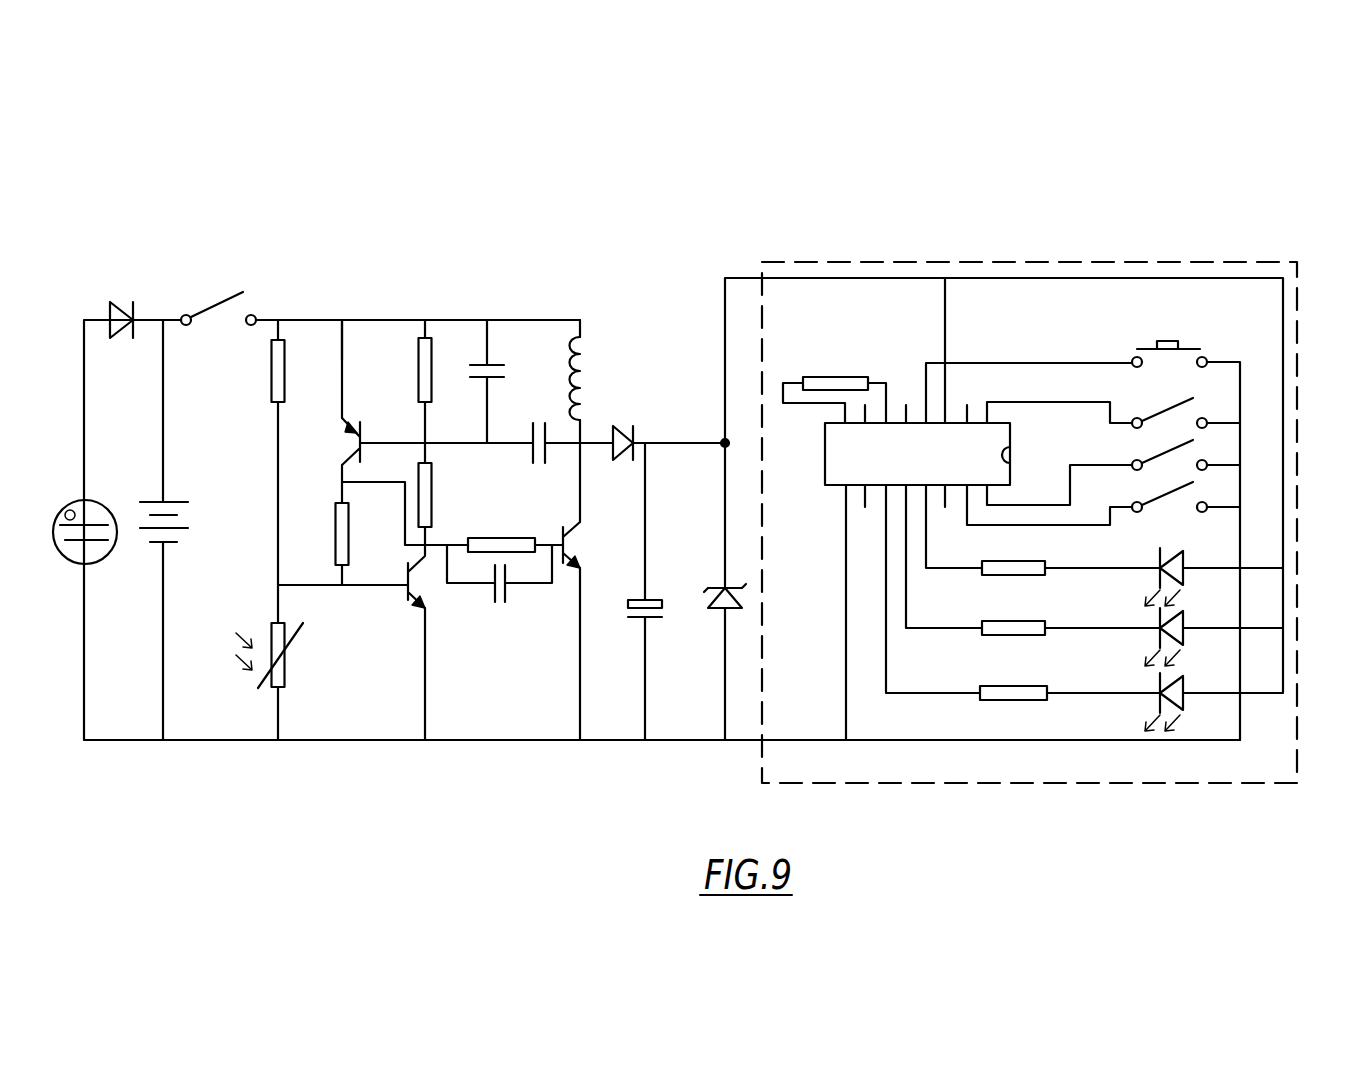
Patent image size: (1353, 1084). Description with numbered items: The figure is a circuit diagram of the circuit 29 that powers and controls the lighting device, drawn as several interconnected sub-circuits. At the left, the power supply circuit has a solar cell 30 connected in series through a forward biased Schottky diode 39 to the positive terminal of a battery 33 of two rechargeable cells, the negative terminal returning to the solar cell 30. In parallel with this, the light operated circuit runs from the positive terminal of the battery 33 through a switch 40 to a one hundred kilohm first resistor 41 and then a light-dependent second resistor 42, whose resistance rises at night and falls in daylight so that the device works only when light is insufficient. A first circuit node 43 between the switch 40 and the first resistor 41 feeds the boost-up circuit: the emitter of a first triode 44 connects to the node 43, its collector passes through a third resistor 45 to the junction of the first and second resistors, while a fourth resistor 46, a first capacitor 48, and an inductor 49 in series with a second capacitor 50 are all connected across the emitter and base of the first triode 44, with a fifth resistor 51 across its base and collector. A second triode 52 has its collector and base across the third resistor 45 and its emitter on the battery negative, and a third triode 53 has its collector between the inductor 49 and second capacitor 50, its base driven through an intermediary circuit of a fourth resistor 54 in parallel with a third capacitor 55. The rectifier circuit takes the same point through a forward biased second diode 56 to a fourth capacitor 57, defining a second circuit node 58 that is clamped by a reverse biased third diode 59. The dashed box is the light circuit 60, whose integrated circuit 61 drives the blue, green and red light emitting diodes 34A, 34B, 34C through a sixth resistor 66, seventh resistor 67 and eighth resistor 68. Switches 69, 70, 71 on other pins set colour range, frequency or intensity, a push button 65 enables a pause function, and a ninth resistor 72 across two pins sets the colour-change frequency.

The circuit 29 is at (1078, 220).
The solar cell 30 is at (100, 505).
The battery 33 is at (178, 493).
The diode 39 is at (135, 310).
The switch 40 is at (253, 316).
The first resistor 41 is at (273, 357).
The second, light-dependent resistor 42 is at (272, 626).
The first circuit node 43 is at (352, 318).
The first triode 44 is at (348, 442).
The third resistor 45 is at (336, 530).
The fourth resistor 46 is at (436, 350).
The first capacitor 48 is at (497, 352).
The inductor 49 is at (592, 342).
The second capacitor 50 is at (531, 437).
The fifth resistor 51 is at (436, 488).
The second triode 52 is at (410, 604).
The third triode 53 is at (578, 572).
The fourth resistor 54 is at (518, 535).
The third capacitor 55 is at (507, 608).
The second diode 56 is at (630, 426).
The fourth capacitor 57 is at (625, 615).
The second circuit node 58 is at (650, 445).
The third diode 59 is at (735, 577).
The light circuit 60 is at (1188, 262).
The integrated circuit 61 is at (830, 463).
The push button 65 is at (1190, 347).
The sixth resistor 66 is at (1015, 570).
The seventh resistor 67 is at (1015, 630).
The eighth resistor 68 is at (1010, 693).
The switch 69 is at (1130, 420).
The switch 70 is at (1130, 464).
The switch 71 is at (1142, 511).
The ninth resistor 72 is at (833, 378).
The first light emitting diode 34A is at (1160, 566).
The second light emitting diode 34B is at (1160, 626).
The third light emitting diode 34C is at (1160, 691).